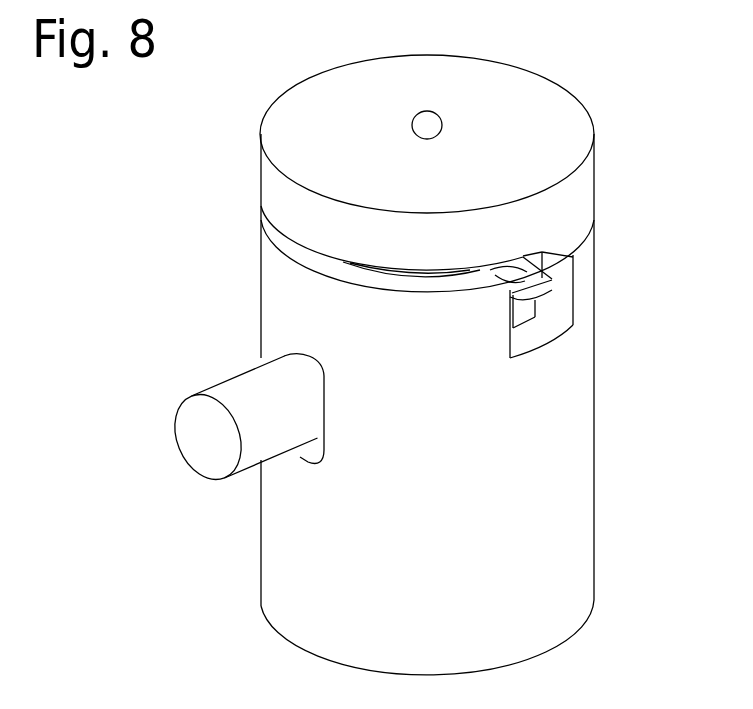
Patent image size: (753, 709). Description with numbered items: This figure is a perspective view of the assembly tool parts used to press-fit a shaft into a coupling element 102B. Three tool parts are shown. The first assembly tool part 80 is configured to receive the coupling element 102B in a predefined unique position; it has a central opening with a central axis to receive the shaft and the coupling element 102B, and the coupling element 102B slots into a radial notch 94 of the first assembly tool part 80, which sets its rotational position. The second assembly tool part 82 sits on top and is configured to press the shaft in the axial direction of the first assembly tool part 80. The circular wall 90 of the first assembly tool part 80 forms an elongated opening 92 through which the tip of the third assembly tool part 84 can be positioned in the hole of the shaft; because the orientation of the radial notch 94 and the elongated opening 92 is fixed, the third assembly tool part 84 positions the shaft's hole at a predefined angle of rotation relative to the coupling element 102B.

The first assembly tool part 80 is at (262, 553).
The second assembly tool part 82 is at (594, 170).
The third assembly tool part 84 is at (203, 410).
The circular wall 90 is at (533, 568).
The elongated opening 92 is at (315, 456).
The radial notch 94 is at (560, 267).
The coupling element 102B is at (535, 292).